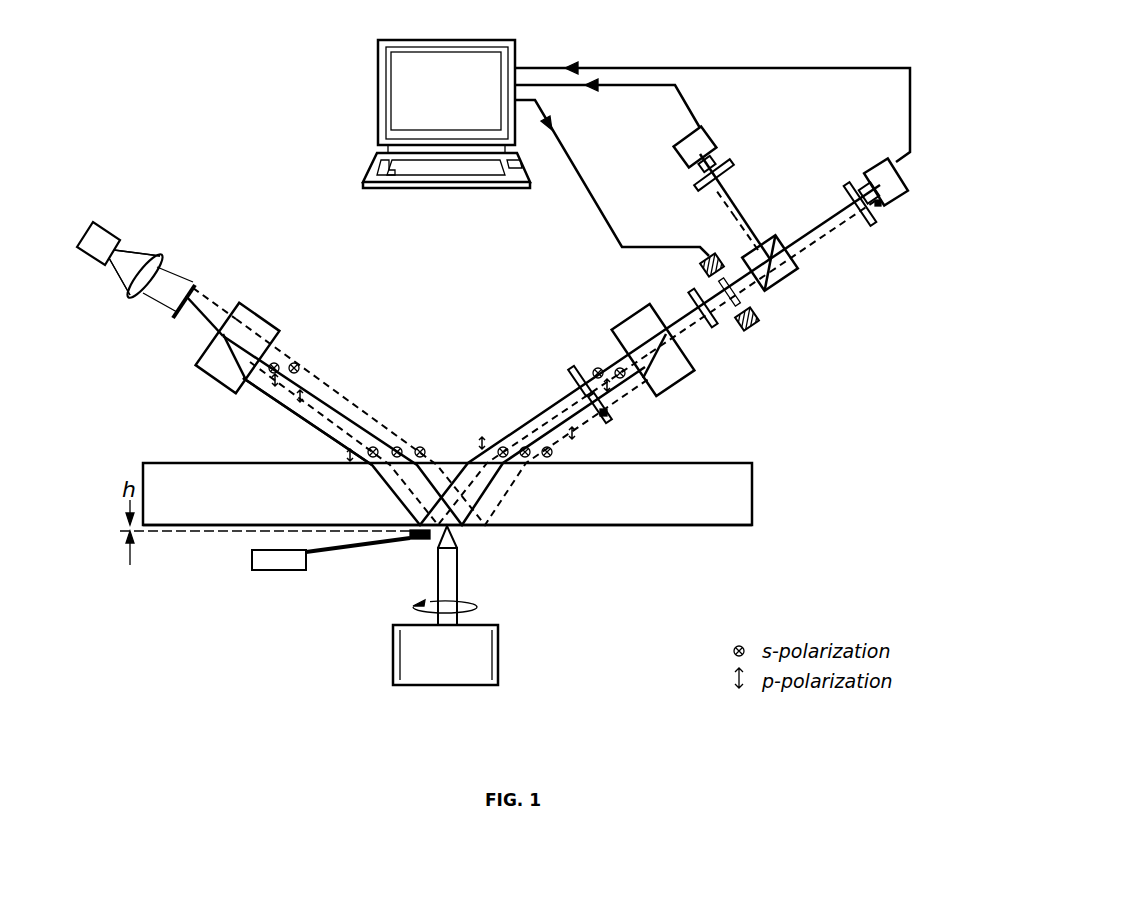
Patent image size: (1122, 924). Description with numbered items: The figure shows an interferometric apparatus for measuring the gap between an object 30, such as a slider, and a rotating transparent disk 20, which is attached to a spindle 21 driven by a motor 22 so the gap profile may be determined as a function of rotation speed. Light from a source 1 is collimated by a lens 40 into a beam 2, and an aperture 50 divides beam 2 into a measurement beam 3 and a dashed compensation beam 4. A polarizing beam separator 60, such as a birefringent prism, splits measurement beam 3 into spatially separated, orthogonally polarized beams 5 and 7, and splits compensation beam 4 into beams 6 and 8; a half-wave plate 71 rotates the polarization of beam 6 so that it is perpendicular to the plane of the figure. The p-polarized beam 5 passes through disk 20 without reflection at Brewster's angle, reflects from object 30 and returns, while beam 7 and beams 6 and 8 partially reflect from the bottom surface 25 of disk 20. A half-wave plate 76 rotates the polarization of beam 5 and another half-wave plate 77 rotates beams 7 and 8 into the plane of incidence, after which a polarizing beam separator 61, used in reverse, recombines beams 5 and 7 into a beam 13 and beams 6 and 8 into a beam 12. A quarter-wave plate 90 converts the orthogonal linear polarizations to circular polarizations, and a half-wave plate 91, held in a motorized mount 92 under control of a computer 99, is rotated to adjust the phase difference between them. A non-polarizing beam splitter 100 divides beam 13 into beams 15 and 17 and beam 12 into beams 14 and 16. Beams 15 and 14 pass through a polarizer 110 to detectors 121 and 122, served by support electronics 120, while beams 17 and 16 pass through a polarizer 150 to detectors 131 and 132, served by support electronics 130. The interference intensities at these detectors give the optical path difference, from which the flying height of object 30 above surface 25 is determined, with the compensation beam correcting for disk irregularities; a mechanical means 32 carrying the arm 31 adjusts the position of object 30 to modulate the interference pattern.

The source 1 is at (108, 226).
The beam 2 is at (178, 300).
The measurement beam 3 is at (196, 322).
The compensation beam 4 is at (232, 312).
The beam 5 is at (322, 437).
The beam 6 is at (348, 436).
The beam 7 is at (372, 427).
The beam 8 is at (392, 430).
The beam 12 is at (672, 313).
The beam 13 is at (678, 336).
The beam 14 is at (840, 220).
The beam 15 is at (818, 217).
The beam 16 is at (724, 208).
The beam 17 is at (717, 188).
The rotating transparent disk 20 is at (447, 494).
The spindle 21 is at (460, 576).
The motor 22 is at (500, 648).
The bottom surface 25 is at (678, 527).
The object 30 is at (415, 536).
The arm 31 is at (347, 553).
The mechanical means 32 is at (272, 573).
The lens 40 is at (128, 300).
The aperture 50 is at (175, 318).
The polarizing beam separator 60 is at (213, 384).
The polarizing beam separator 61 is at (675, 388).
The half-wave plate 71 is at (287, 405).
The half-wave plate 76 is at (585, 362).
The half-wave plate 77 is at (603, 417).
The quarter-wave plate 90 is at (707, 328).
The half-wave plate 91 is at (732, 305).
The mount 92 is at (757, 325).
The computer 99 is at (377, 85).
The non-polarizing beam splitter 100 is at (772, 288).
The polarizer 110 is at (876, 228).
The support electronics 120 is at (905, 180).
The detector 121 is at (866, 175).
The detector 122 is at (880, 208).
The support electronics 130 is at (688, 132).
The detector 131 is at (718, 153).
The detector 132 is at (692, 176).
The polarizer 150 is at (731, 177).